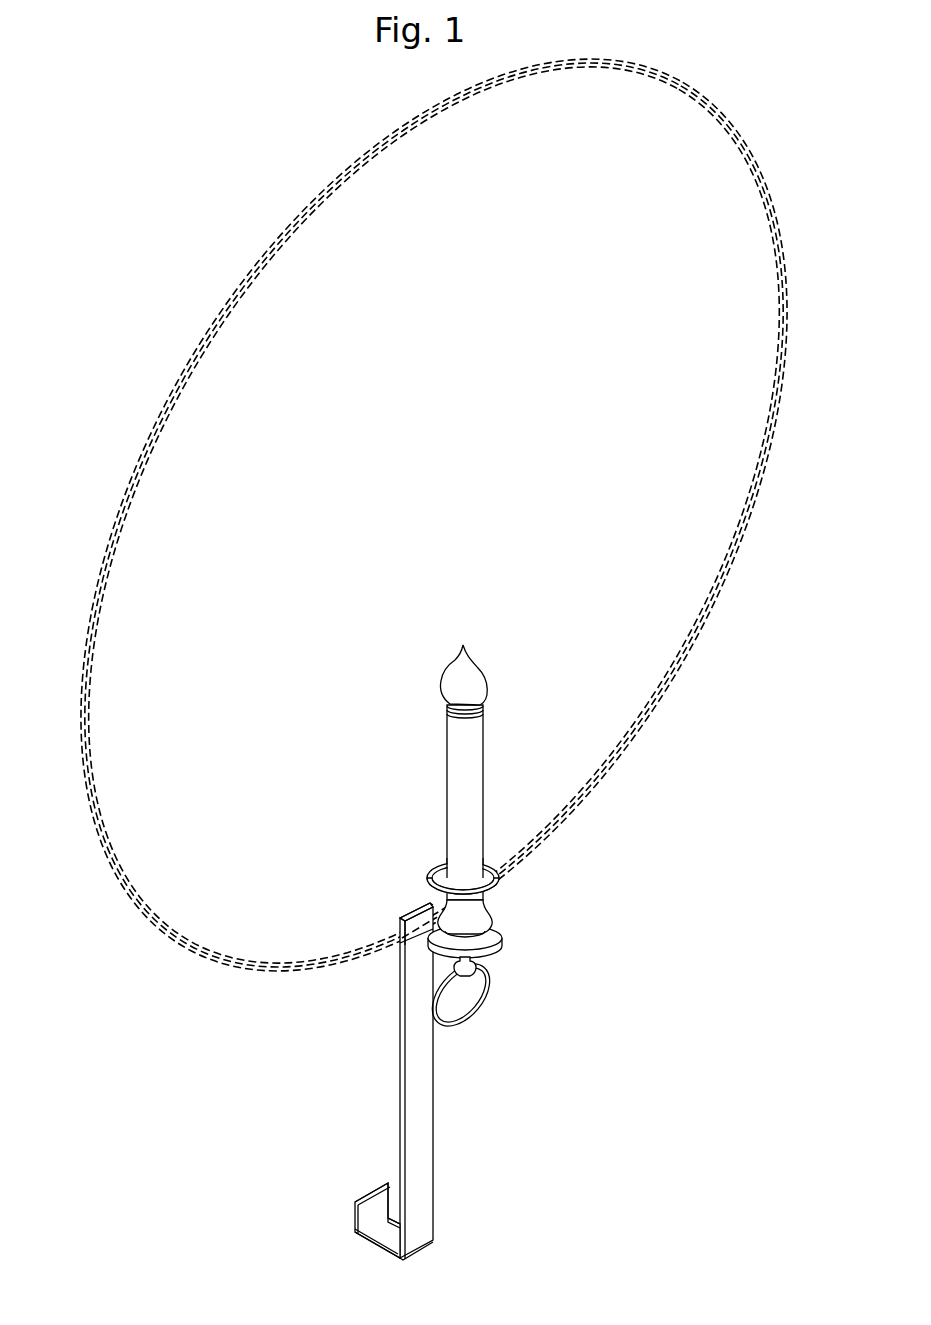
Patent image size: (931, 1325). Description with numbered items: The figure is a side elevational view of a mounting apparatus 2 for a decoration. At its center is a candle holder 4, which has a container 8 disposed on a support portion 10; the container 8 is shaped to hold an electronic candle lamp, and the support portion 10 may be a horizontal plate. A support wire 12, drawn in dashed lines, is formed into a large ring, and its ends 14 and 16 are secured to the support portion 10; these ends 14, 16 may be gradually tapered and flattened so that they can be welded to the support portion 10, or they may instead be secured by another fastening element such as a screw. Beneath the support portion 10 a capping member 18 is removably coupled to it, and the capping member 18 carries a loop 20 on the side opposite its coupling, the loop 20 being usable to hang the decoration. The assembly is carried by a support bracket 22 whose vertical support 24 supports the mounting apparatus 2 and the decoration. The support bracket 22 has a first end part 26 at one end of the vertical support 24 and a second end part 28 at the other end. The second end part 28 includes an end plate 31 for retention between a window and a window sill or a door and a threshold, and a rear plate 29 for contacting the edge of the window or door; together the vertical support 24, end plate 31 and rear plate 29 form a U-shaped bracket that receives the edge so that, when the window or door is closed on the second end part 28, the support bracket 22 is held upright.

The mounting apparatus 2 is at (564, 1021).
The candle holder 4 is at (440, 848).
The container 8 is at (438, 868).
The support portion 10 is at (500, 925).
The support wire 12 is at (717, 582).
The end of the support wire 14 is at (400, 916).
The end of the support wire 16 is at (432, 903).
The capping member 18 is at (497, 964).
The loop 20 is at (485, 1010).
The support bracket 22 is at (401, 1075).
The vertical support 24 is at (420, 1063).
The first end part 26 is at (395, 942).
The second end part 28 is at (387, 1232).
The rear plate 29 is at (357, 1217).
The end plate 31 is at (385, 1256).